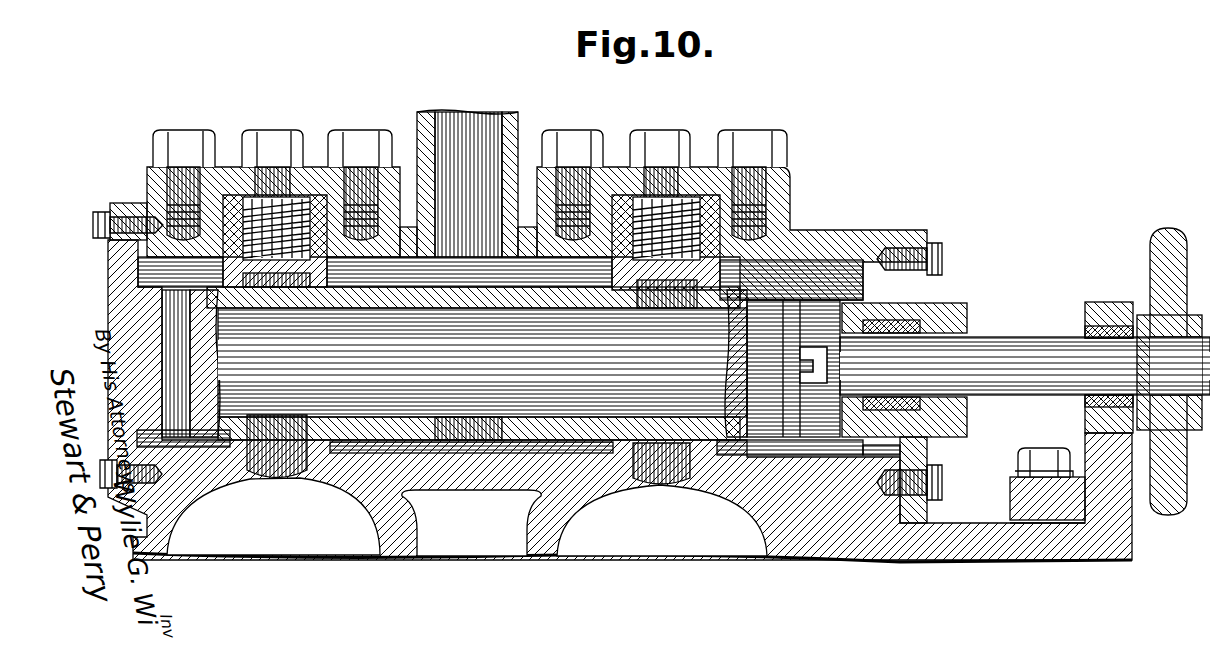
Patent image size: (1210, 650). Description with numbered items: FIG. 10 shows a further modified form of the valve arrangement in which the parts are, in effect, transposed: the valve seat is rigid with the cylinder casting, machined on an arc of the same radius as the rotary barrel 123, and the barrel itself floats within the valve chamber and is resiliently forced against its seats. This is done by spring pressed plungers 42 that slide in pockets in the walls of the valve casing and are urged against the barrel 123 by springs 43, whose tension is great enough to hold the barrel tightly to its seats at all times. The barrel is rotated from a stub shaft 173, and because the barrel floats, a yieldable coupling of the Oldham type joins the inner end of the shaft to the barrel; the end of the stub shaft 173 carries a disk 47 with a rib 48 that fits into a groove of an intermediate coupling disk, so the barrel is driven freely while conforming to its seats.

The spring pressed plunger 42 is at (133, 268).
The spring 43 is at (293, 197).
The rotary barrel 123 is at (747, 297).
The disk 47 is at (801, 314).
The rib 48 is at (810, 362).
The stub shaft 173 is at (1013, 360).